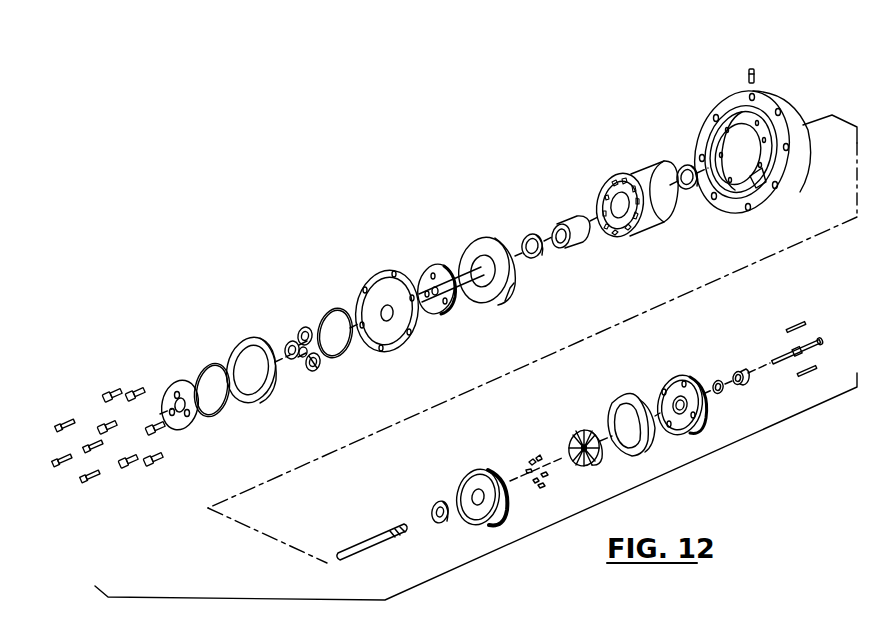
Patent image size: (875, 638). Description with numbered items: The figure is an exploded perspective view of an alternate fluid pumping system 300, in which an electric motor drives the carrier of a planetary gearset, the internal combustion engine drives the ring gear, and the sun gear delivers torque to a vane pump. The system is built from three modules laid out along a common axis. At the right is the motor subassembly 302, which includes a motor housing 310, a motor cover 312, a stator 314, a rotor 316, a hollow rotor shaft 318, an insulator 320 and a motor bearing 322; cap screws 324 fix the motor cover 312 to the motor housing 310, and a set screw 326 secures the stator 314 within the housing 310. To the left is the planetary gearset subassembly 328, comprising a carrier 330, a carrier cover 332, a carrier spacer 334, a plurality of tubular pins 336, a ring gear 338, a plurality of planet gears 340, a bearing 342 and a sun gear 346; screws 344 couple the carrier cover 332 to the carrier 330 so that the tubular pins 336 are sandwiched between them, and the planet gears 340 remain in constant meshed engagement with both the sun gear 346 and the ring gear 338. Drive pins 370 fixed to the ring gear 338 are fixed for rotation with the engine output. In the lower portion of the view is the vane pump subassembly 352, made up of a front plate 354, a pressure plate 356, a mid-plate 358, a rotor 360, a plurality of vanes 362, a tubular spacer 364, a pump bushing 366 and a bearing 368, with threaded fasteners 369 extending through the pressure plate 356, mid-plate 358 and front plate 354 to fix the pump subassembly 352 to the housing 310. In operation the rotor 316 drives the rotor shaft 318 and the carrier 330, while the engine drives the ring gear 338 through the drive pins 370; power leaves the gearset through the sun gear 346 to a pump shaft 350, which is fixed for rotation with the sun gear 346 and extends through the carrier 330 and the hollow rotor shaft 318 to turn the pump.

The fluid pumping system 300 is at (262, 163).
The motor subassembly 302 is at (777, 90).
The motor housing 310 is at (790, 180).
The motor cover 312 is at (381, 272).
The stator 314 is at (658, 215).
The rotor 316 is at (600, 188).
The hollow rotor shaft 318 is at (580, 241).
The insulator 320 is at (492, 233).
The motor bearing 322 is at (536, 259).
The cap screws 324 is at (108, 420).
The set screw 326 is at (747, 78).
The planetary gearset subassembly 328 is at (198, 302).
The carrier 330 is at (433, 263).
The carrier cover 332 is at (171, 385).
The carrier spacer 334 is at (336, 309).
The tubular pins 336 is at (320, 367).
The ring gear 338 is at (236, 345).
The planet gears 340 is at (303, 327).
The bearing 342 is at (313, 372).
The screws 344 is at (300, 359).
The sun gear 346 is at (287, 343).
The pump shaft 350 is at (404, 526).
The vane pump subassembly 352 is at (757, 300).
The front plate 354 is at (473, 470).
The pressure plate 356 is at (707, 411).
The mid-plate 358 is at (616, 400).
The rotor 360 is at (575, 437).
The vanes 362 is at (545, 478).
The tubular spacer 364 is at (716, 380).
The pump bushing 366 is at (742, 371).
The bearing 368 is at (439, 501).
The threaded fasteners 369 is at (815, 338).
The drive pins 370 is at (90, 438).